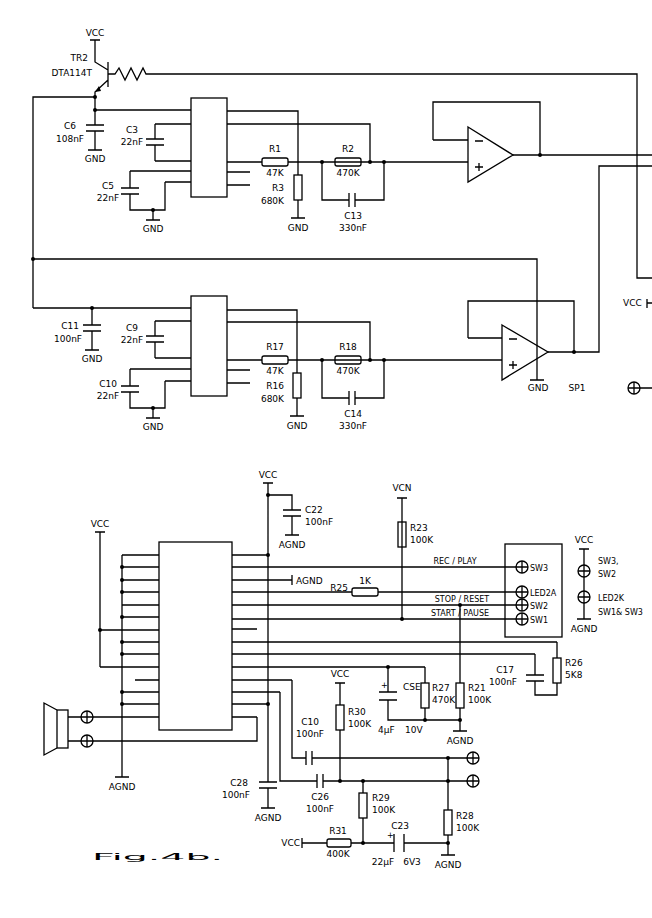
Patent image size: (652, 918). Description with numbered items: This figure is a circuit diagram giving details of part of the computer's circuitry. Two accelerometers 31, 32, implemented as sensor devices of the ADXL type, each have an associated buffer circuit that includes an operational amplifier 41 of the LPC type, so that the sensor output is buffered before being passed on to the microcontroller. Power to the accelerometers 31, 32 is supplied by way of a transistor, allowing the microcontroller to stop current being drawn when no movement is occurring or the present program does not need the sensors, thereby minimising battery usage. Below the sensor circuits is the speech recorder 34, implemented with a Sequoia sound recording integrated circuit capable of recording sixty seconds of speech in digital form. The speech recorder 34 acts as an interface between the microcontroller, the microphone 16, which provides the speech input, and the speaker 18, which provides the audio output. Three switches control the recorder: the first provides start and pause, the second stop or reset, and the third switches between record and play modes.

The accelerometer 31 is at (232, 96).
The accelerometer 32 is at (232, 294).
The operational amplifier 41 is at (496, 158).
The speech recorder 34 is at (196, 541).
The speaker 18 is at (52, 706).
The microphone 16 is at (522, 774).